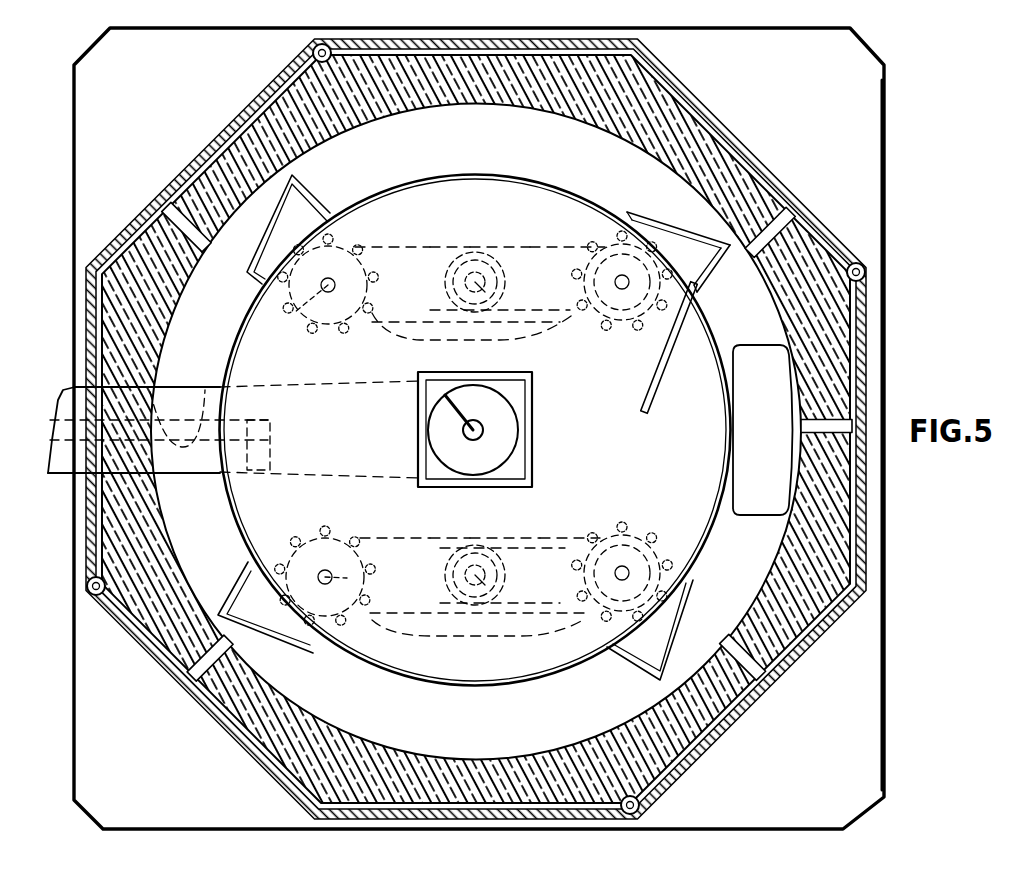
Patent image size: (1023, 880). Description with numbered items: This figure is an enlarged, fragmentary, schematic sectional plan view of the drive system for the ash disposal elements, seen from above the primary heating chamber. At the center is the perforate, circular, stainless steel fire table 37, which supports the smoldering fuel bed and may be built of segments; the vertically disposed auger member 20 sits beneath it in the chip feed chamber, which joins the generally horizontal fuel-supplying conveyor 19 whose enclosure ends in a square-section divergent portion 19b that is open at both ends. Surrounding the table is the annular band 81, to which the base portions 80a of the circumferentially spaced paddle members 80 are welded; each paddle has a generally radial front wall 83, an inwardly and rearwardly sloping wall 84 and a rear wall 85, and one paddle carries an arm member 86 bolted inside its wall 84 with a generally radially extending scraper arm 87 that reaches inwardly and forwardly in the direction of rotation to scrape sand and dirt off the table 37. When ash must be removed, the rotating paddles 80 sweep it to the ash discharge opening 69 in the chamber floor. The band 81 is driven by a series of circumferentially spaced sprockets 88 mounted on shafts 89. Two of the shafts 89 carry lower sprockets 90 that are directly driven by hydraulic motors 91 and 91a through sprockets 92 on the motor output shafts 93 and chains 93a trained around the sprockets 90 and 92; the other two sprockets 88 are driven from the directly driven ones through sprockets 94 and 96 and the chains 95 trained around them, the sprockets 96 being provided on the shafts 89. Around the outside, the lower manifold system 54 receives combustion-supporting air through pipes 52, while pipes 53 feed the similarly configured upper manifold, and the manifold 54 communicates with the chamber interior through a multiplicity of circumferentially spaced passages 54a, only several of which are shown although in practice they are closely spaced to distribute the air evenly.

The fuel-supplying conveyor 19 is at (181, 488).
The divergent portion 19b is at (345, 388).
The auger member 20 is at (500, 462).
The fire table 37 is at (604, 459).
The pipes 52 is at (313, 52).
The pipes 53 is at (868, 272).
The lower manifolds 54 is at (187, 180).
The passages 54a is at (181, 266).
The ash discharge opening 69 is at (748, 445).
The paddle members 80 is at (702, 226).
The base portions 80a is at (717, 307).
The annular band 81 is at (722, 390).
The front walls 83 is at (727, 272).
The sloping walls 84 is at (650, 212).
The rear walls 85 is at (623, 208).
The arm member 86 is at (680, 242).
The scraper arm 87 is at (648, 365).
The sprockets 88 is at (480, 479).
The shafts 89 is at (297, 312).
The lower sprockets 90 is at (628, 330).
The hydraulic motor 91 is at (448, 284).
The hydraulic motor 91a is at (447, 592).
The sprockets 92 is at (463, 255).
The output shafts 93 is at (505, 300).
The chains 93a is at (535, 248).
The sprockets 94 is at (570, 250).
The chains 95 is at (478, 246).
The sprockets 96 is at (382, 247).